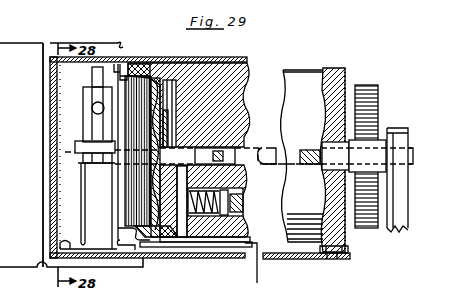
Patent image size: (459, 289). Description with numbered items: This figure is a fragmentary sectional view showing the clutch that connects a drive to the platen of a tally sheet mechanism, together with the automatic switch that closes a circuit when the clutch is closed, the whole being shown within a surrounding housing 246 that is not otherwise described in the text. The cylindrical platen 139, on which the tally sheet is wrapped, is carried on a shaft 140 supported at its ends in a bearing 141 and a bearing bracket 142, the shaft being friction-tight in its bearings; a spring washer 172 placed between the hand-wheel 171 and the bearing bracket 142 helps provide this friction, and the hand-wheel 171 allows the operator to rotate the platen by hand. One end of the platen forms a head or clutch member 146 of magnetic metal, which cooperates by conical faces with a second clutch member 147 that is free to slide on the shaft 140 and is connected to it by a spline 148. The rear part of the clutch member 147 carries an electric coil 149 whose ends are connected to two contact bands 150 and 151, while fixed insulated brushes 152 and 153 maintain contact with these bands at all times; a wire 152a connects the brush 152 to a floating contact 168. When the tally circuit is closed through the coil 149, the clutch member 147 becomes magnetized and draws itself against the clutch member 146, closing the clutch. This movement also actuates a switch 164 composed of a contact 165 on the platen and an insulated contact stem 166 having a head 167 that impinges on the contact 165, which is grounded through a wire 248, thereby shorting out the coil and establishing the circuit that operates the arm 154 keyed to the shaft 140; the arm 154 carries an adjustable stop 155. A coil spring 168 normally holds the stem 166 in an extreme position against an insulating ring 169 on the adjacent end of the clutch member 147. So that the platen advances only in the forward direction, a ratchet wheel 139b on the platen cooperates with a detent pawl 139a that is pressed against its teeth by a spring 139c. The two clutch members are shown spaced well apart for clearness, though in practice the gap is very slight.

The housing 246 is at (60, 57).
The wire 152a is at (48, 101).
The clutch member 146 is at (166, 62).
The wire 248 is at (257, 283).
The contact band 150 is at (118, 121).
The adjustable stop 155 is at (92, 108).
The spline 148 is at (75, 150).
The arm 154 is at (80, 163).
The bearing 141 is at (82, 194).
The electric coil 149 is at (133, 192).
The clutch member 147 is at (152, 70).
The brush 152 is at (134, 58).
The insulating ring 169 is at (184, 80).
The switch 164 is at (240, 170).
The contact 165 is at (228, 204).
The head 167 is at (245, 195).
The coil spring 168 is at (244, 214).
The shaft 140 is at (265, 150).
The platen 139 is at (304, 78).
The ratchet wheel 139b is at (335, 68).
The detent pawl 139a is at (341, 250).
The spring 139c is at (331, 259).
The hand-wheel 171 is at (366, 86).
The spring washer 172 is at (386, 128).
The bearing bracket 142 is at (406, 234).
The contact stem 166 is at (196, 242).
The contact band 151 is at (170, 247).
The brush 153 is at (150, 240).